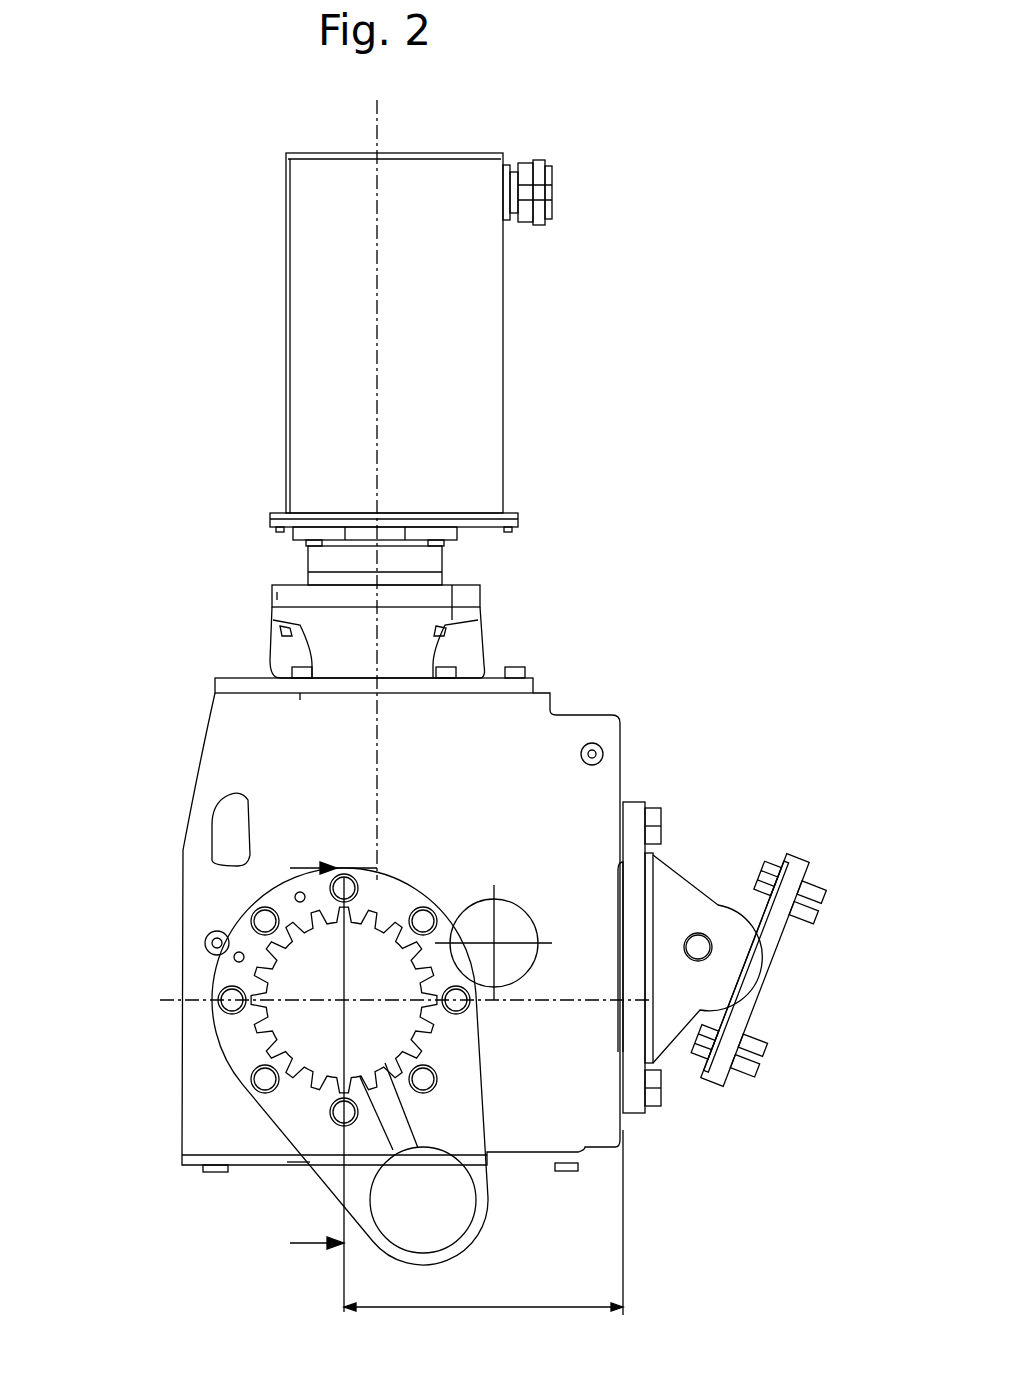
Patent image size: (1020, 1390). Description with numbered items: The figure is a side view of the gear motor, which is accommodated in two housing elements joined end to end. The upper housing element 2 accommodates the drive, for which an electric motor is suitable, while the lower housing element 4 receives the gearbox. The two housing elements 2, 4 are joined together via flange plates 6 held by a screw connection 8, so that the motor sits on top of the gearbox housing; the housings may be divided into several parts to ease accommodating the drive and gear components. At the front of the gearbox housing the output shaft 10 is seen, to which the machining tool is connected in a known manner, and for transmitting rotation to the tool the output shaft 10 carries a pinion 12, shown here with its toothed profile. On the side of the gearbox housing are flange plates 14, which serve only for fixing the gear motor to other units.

The housing element 2 is at (505, 336).
The housing element 4 is at (292, 768).
The flange plates 6 is at (522, 690).
The screw connection 8 is at (520, 677).
The output shaft 10 is at (318, 1047).
The pinion 12 is at (258, 1012).
The flange plates 14 is at (761, 950).